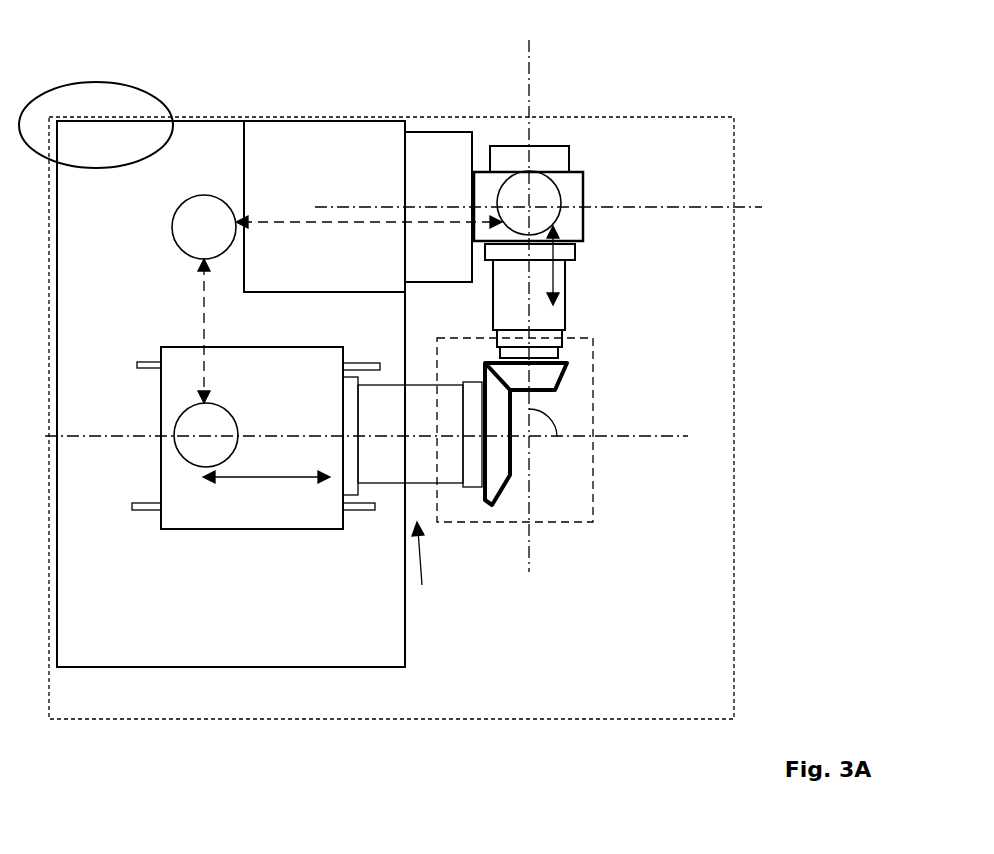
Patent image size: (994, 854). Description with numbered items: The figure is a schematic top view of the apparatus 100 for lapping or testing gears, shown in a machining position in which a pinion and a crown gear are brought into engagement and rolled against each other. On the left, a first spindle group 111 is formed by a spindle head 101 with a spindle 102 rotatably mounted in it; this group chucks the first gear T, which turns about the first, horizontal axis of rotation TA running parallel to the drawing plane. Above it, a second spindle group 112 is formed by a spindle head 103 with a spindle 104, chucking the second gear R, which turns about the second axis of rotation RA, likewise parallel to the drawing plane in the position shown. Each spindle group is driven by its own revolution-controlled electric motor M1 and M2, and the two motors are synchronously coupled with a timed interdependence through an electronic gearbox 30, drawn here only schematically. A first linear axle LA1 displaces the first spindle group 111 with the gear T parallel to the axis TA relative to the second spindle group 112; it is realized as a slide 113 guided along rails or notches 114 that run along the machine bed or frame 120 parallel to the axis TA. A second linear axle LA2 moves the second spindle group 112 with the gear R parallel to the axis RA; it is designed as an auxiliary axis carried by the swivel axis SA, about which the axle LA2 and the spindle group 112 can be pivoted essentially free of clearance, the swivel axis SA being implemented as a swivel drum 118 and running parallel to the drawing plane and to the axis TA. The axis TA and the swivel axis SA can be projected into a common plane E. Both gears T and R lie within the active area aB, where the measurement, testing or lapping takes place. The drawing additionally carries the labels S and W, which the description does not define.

The apparatus 100 is at (235, 78).
The swivel drum 118 is at (447, 160).
The electronic gearbox 30 is at (337, 299).
The spindle head 103 is at (568, 248).
The second spindle group 112 is at (597, 292).
The spindle 104 is at (558, 354).
The rails or notches 114 is at (137, 366).
The spindle head 101 is at (358, 503).
The first spindle group 111 is at (428, 566).
The spindle 102 is at (470, 482).
The slide 113 is at (300, 512).
The machine bed or frame 120 is at (397, 635).
The sensor S is at (96, 125).
The common plane E is at (734, 354).
The second axis of rotation RA is at (532, 293).
The swivel axis SA is at (557, 208).
The first axis of rotation TA is at (348, 434).
The electric motor M1 is at (206, 435).
The electric motor M2 is at (528, 193).
The first linear axle LA1 is at (266, 490).
The second linear axle LA2 is at (558, 229).
The angle W is at (543, 424).
The second gear R is at (567, 380).
The first gear T is at (510, 475).
The active area aB is at (593, 516).